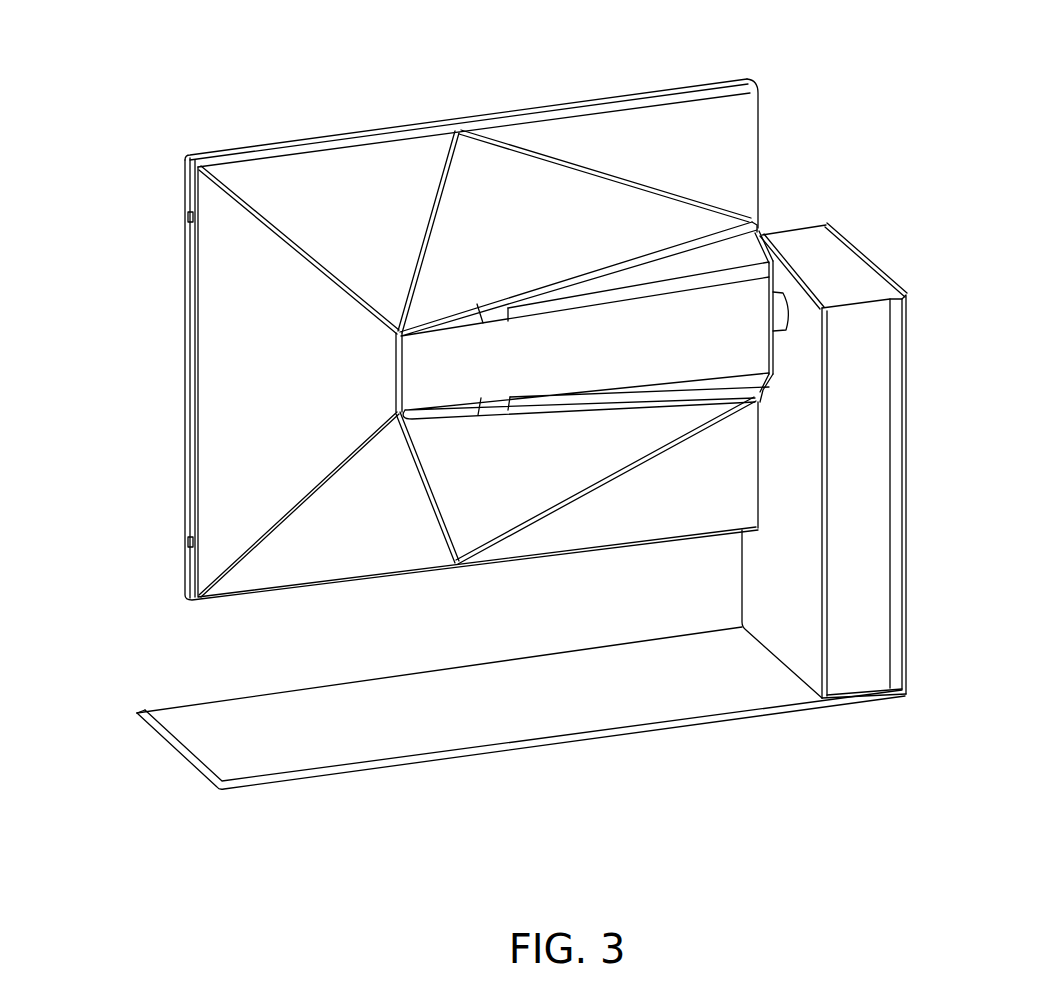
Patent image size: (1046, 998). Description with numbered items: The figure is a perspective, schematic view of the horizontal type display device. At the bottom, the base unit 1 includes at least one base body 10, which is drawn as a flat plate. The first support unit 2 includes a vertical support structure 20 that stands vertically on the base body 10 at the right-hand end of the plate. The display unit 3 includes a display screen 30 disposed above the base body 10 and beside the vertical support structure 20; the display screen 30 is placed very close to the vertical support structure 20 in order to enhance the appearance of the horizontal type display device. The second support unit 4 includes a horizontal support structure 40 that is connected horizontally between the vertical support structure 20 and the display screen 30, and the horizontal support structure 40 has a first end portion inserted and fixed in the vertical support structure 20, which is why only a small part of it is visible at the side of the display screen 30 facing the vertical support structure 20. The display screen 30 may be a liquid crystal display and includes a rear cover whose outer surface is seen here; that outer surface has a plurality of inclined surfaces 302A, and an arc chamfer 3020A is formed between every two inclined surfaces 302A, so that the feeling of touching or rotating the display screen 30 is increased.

The base unit 1 is at (146, 628).
The base body 10 is at (192, 725).
The first support unit 2 is at (786, 152).
The vertical support structure 20 is at (790, 245).
The display unit 3 is at (389, 42).
The display screen 30 is at (411, 126).
The inclined surface 302A is at (245, 402).
The arc chamfer 3020A is at (272, 226).
The second support unit 4 is at (781, 427).
The horizontal support structure 40 is at (780, 335).